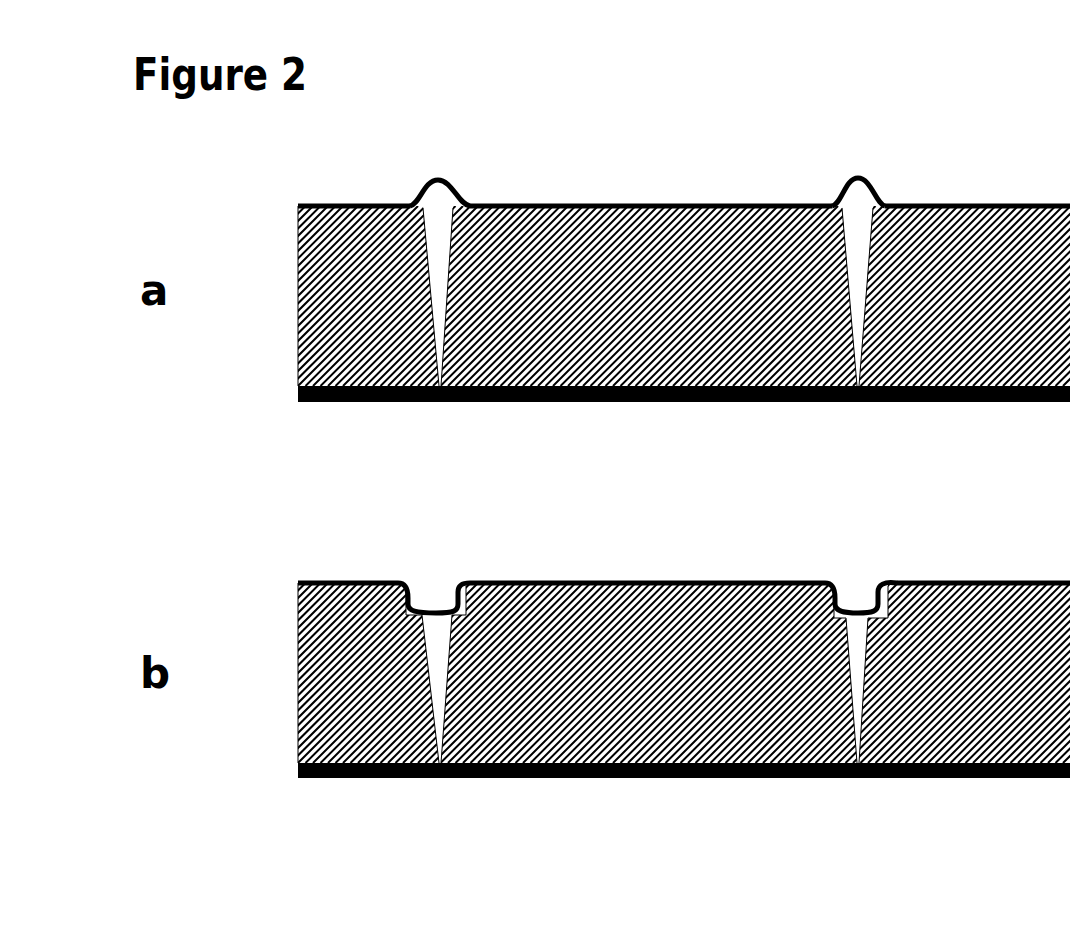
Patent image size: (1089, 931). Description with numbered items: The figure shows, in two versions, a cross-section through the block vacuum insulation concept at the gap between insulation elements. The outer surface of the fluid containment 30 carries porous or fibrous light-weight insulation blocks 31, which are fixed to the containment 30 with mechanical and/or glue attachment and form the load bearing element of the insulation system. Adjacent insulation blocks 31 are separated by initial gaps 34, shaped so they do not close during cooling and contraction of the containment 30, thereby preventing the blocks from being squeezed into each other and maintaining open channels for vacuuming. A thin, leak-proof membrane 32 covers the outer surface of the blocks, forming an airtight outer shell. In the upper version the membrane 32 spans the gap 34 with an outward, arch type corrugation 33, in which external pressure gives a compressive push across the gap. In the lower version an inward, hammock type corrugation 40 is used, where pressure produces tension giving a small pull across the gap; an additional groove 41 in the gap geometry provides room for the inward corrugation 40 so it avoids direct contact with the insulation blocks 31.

The containment 30 is at (650, 400).
The insulation blocks 31 is at (343, 253).
The membrane 32 is at (572, 204).
The corrugation 33 is at (438, 178).
The gaps 34 is at (437, 255).
The inward corrugation 40 is at (433, 610).
The additional groove 41 is at (473, 587).